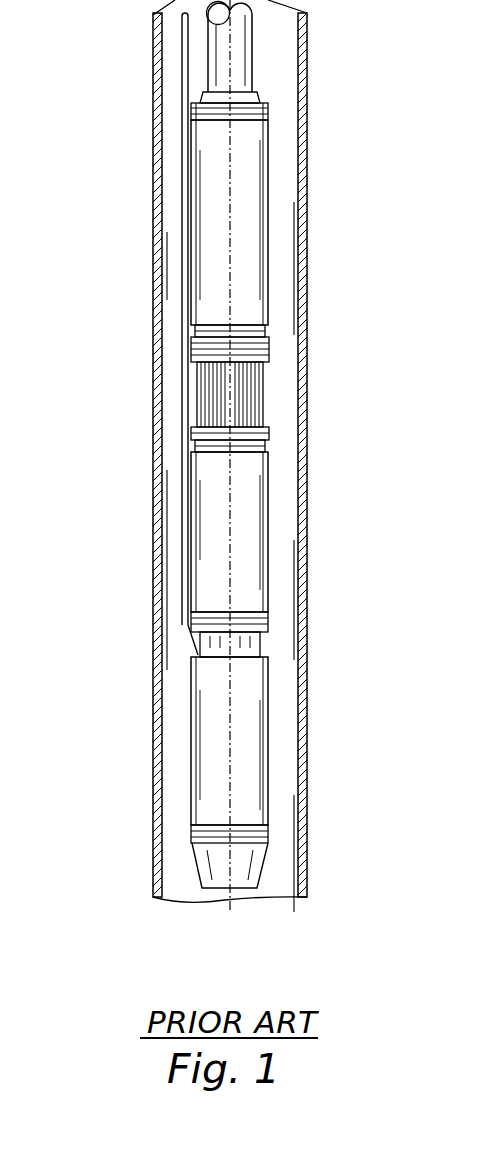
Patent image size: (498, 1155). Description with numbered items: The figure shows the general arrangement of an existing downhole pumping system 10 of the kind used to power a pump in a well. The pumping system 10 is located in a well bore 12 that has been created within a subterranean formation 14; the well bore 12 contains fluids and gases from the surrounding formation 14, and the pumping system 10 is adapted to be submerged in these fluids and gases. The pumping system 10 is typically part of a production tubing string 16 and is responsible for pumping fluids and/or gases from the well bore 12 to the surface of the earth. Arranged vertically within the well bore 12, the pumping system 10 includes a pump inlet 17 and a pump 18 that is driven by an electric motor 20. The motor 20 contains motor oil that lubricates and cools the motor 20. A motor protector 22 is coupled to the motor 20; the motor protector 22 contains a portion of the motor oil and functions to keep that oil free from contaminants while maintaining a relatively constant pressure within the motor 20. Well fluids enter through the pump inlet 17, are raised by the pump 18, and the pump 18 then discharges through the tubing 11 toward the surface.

The pumping system 10 is at (277, 377).
The tubing 11 is at (220, 63).
The well bore 12 is at (282, 65).
The subterranean formation 14 is at (93, 433).
The production tubing string 16 is at (180, 186).
The pump inlet 17 is at (197, 380).
The pump 18 is at (252, 262).
The electric motor 20 is at (202, 713).
The motor protector 22 is at (255, 550).